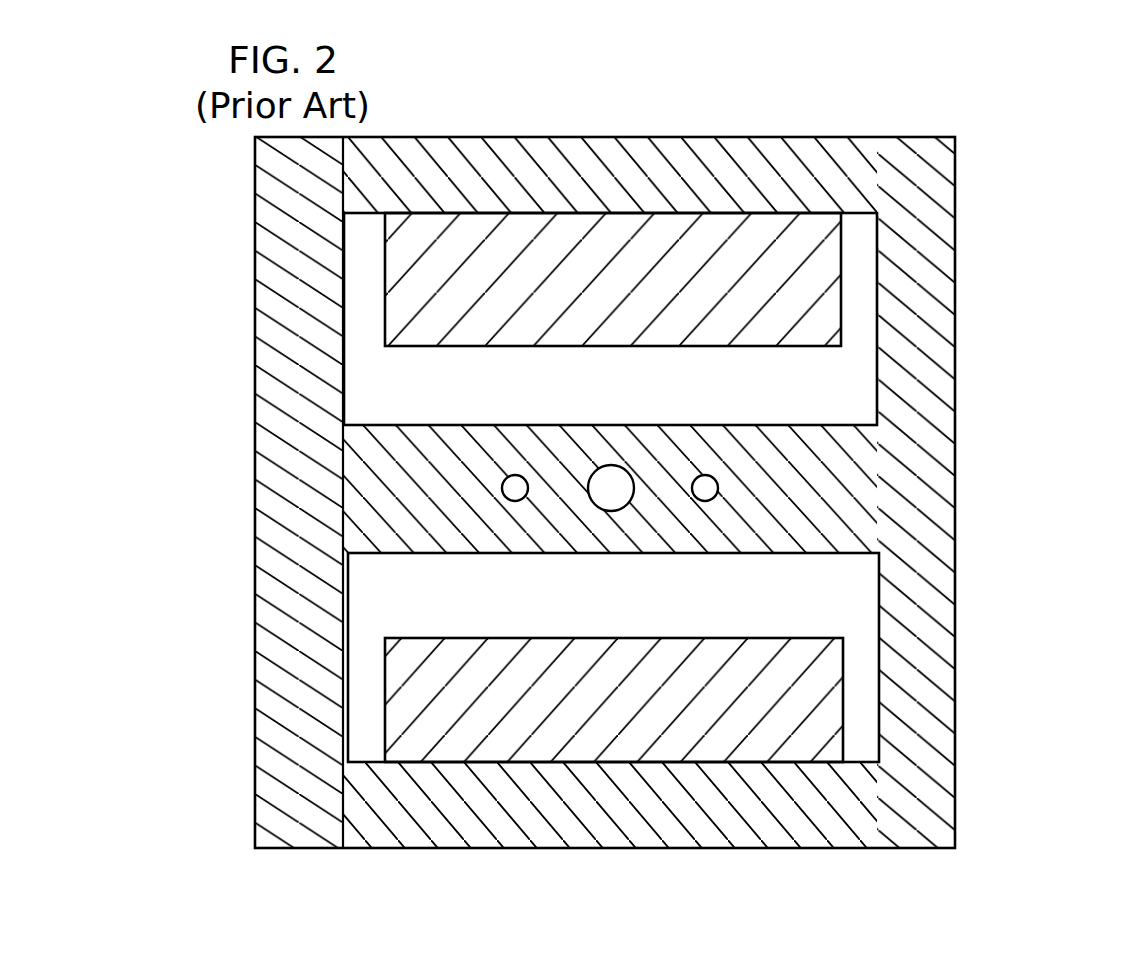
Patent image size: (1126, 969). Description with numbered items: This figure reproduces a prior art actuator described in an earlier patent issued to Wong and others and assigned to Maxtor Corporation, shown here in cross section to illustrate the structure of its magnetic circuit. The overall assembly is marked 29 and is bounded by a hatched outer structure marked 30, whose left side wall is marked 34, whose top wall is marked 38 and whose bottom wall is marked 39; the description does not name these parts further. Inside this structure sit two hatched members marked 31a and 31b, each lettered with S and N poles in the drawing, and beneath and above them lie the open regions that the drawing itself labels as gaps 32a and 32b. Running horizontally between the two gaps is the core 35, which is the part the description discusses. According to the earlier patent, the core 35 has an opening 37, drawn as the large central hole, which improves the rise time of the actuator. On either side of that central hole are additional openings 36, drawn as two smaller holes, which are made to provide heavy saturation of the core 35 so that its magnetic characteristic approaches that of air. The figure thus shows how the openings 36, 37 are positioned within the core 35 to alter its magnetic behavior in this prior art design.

The prior art magnet assembly 29 is at (621, 479).
The housing 30 is at (601, 488).
The upper permanent magnet 31a is at (718, 351).
The lower permanent magnet 31b is at (767, 637).
The upper gap 32a is at (524, 402).
The lower gap 32b is at (521, 612).
The side wall of housing 34 is at (253, 420).
The core 35 is at (416, 494).
The additional openings 36 is at (531, 491).
The opening 37 is at (613, 463).
The top wall of housing 38 is at (755, 161).
The bottom wall of housing 39 is at (580, 832).